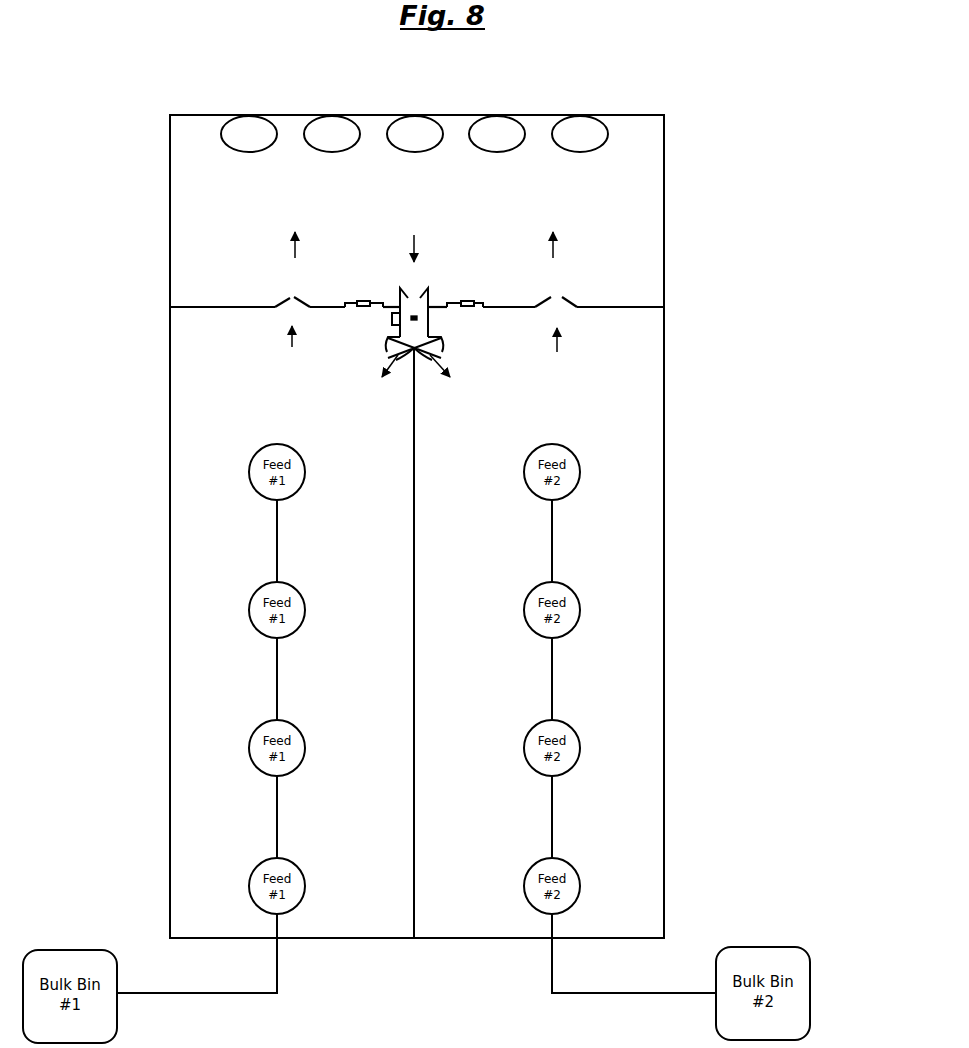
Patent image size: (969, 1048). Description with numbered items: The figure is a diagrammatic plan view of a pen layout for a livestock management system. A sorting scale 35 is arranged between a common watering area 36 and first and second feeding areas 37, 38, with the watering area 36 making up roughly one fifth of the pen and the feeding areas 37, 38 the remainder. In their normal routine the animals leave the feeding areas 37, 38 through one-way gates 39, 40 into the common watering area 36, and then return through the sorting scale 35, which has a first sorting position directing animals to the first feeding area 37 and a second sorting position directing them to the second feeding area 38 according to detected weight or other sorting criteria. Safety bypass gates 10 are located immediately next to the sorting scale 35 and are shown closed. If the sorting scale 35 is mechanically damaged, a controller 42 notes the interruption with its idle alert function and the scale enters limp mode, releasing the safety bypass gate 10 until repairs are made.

The safety bypass gate 10 is at (353, 305).
The sorting scale 35 is at (400, 297).
The common watering area 36 is at (223, 222).
The first feeding area 37 is at (218, 359).
The second feeding area 38 is at (608, 372).
The one-way gate 39 is at (290, 298).
The one-way gate 40 is at (562, 297).
The controller 42 is at (392, 317).